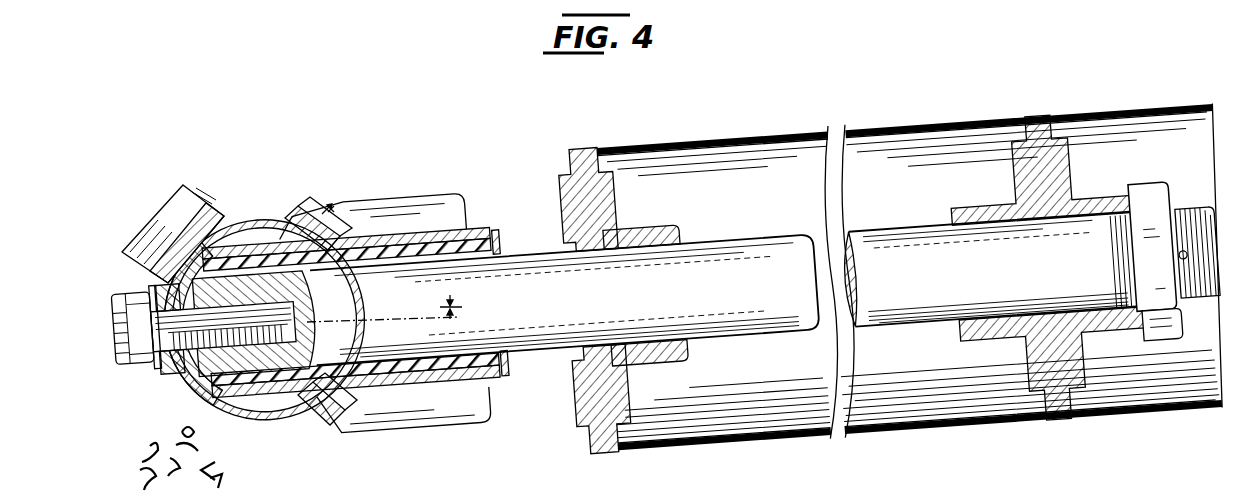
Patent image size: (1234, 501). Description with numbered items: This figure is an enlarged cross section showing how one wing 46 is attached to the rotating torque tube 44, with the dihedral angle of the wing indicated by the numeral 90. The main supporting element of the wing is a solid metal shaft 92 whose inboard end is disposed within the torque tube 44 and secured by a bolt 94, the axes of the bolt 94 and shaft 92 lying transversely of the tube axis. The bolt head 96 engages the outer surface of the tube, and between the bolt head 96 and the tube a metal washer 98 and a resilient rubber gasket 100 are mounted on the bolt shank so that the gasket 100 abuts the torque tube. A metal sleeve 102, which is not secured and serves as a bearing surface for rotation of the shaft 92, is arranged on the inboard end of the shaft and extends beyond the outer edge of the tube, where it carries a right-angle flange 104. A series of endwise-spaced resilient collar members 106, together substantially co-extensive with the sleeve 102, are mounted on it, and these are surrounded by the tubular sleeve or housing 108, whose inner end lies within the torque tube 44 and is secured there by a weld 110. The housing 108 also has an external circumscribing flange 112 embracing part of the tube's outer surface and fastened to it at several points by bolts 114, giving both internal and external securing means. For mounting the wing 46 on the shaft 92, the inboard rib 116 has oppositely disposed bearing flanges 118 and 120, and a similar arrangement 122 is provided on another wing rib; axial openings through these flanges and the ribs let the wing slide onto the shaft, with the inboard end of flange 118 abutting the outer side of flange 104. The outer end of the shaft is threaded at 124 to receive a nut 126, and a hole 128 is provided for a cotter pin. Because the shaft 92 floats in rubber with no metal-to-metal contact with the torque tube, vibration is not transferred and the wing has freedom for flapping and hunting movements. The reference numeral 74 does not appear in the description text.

The torque tube 44 is at (300, 225).
The wing 46 is at (877, 130).
The socket ring 74 is at (235, 212).
The dihedral angle 90 is at (395, 318).
The shaft 92 is at (752, 241).
The bolt 94 is at (150, 285).
The bolt head 96 is at (118, 347).
The metal washer 98 is at (150, 366).
The resilient gasket 100 is at (163, 375).
The metal sleeve 102 is at (436, 240).
The flange 104 is at (500, 236).
The resilient collar members 106 is at (396, 236).
The tubular sleeve or housing 108 is at (425, 200).
The weld 110 is at (170, 222).
The external circumscribing flange 112 is at (320, 212).
The bolts 114 is at (352, 208).
The inboard rib 116 is at (586, 448).
The bearing flange 118 is at (561, 200).
The bearing flange 120 is at (618, 211).
The bearing flange arrangement of other wing rib 122 is at (1012, 340).
The threaded portion 124 is at (1179, 305).
The nut 126 is at (1163, 341).
The hole 128 is at (1187, 213).